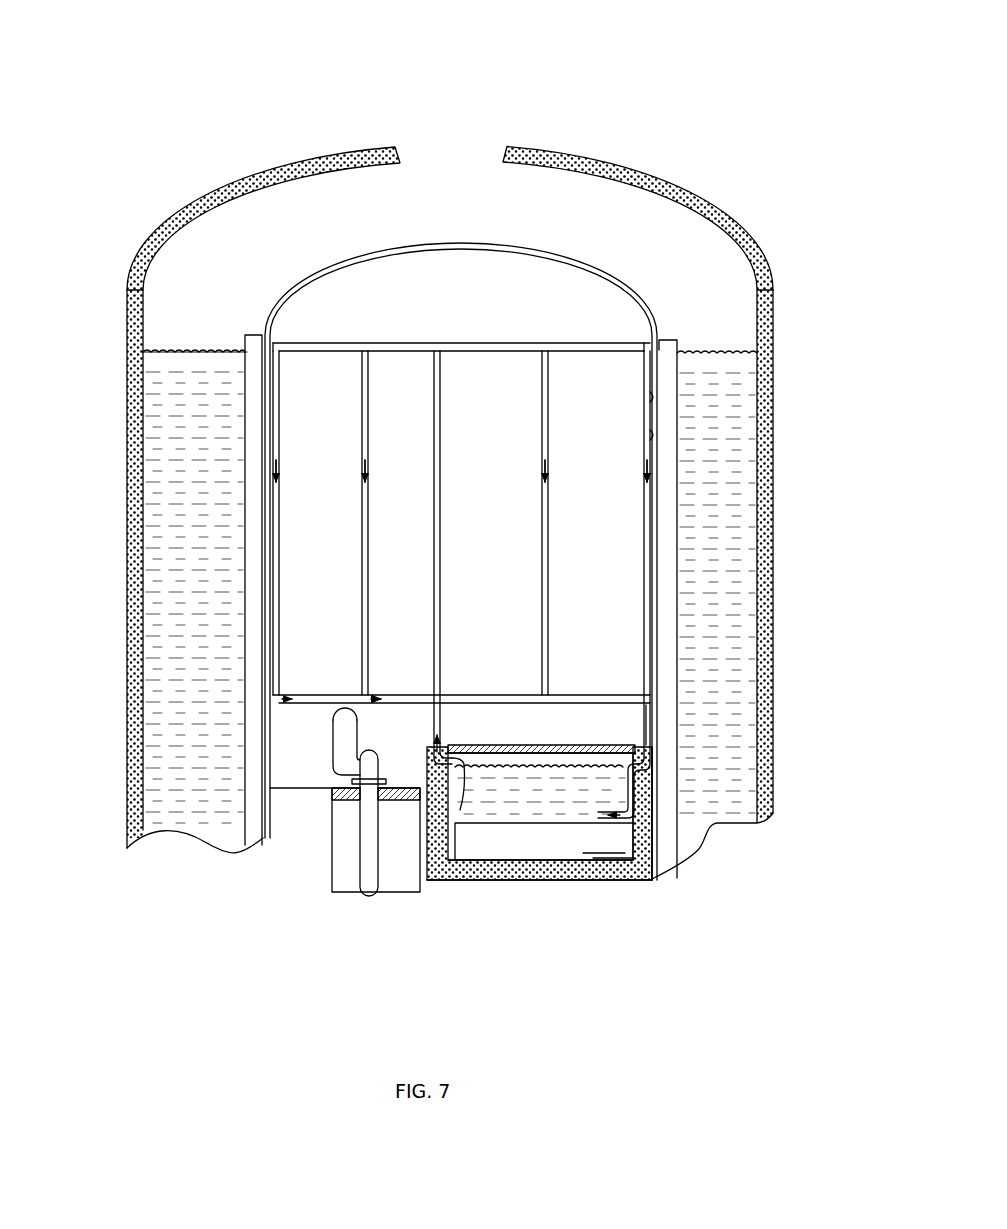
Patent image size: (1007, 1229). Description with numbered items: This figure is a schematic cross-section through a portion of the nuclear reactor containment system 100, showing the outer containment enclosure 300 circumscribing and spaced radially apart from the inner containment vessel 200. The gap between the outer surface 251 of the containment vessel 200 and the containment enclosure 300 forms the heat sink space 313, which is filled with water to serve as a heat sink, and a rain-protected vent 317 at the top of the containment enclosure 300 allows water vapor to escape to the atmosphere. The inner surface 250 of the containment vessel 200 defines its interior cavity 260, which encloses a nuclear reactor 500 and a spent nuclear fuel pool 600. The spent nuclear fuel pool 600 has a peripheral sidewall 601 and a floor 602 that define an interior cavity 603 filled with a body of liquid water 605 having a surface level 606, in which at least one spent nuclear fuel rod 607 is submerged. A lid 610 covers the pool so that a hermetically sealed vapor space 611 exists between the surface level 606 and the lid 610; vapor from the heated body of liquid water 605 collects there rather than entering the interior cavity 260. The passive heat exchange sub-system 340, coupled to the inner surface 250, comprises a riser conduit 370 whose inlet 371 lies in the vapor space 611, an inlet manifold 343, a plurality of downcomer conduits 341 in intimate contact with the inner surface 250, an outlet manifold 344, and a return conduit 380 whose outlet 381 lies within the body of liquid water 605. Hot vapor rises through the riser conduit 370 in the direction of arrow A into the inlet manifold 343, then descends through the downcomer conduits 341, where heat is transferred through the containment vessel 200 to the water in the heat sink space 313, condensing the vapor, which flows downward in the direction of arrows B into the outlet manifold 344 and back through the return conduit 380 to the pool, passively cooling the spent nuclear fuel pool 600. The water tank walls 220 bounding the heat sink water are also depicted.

The nuclear reactor containment system 100 is at (175, 82).
The containment vessel 200 is at (649, 306).
The water tank wall 220 is at (245, 347).
The inner surface 250 is at (650, 397).
The outer surface 251 is at (655, 435).
The interior cavity 260 is at (313, 312).
The containment enclosure 300 is at (205, 207).
The heat sink space 313 is at (160, 805).
The rain-protected vent 317 is at (483, 131).
The passive heat exchange sub-system 340 is at (585, 326).
The downcomer conduit 341 is at (365, 416).
The inlet manifold 343 is at (500, 343).
The outlet manifold 344 is at (313, 702).
The riser conduit 370 is at (440, 650).
The inlet 371 is at (463, 764).
The return conduit 380 is at (650, 746).
The outlet 381 is at (593, 858).
The nuclear reactor 500 is at (352, 836).
The spent nuclear fuel pool 600 is at (528, 892).
The peripheral sidewall 601 is at (643, 817).
The floor 602 is at (487, 872).
The interior cavity 603 is at (518, 803).
The body of liquid water 605 is at (485, 808).
The surface level 606 is at (600, 745).
The spent nuclear fuel rod 607 is at (583, 853).
The lid 610 is at (558, 752).
The vapor space 611 is at (610, 762).
The arrow A is at (437, 505).
The arrows B is at (274, 468).